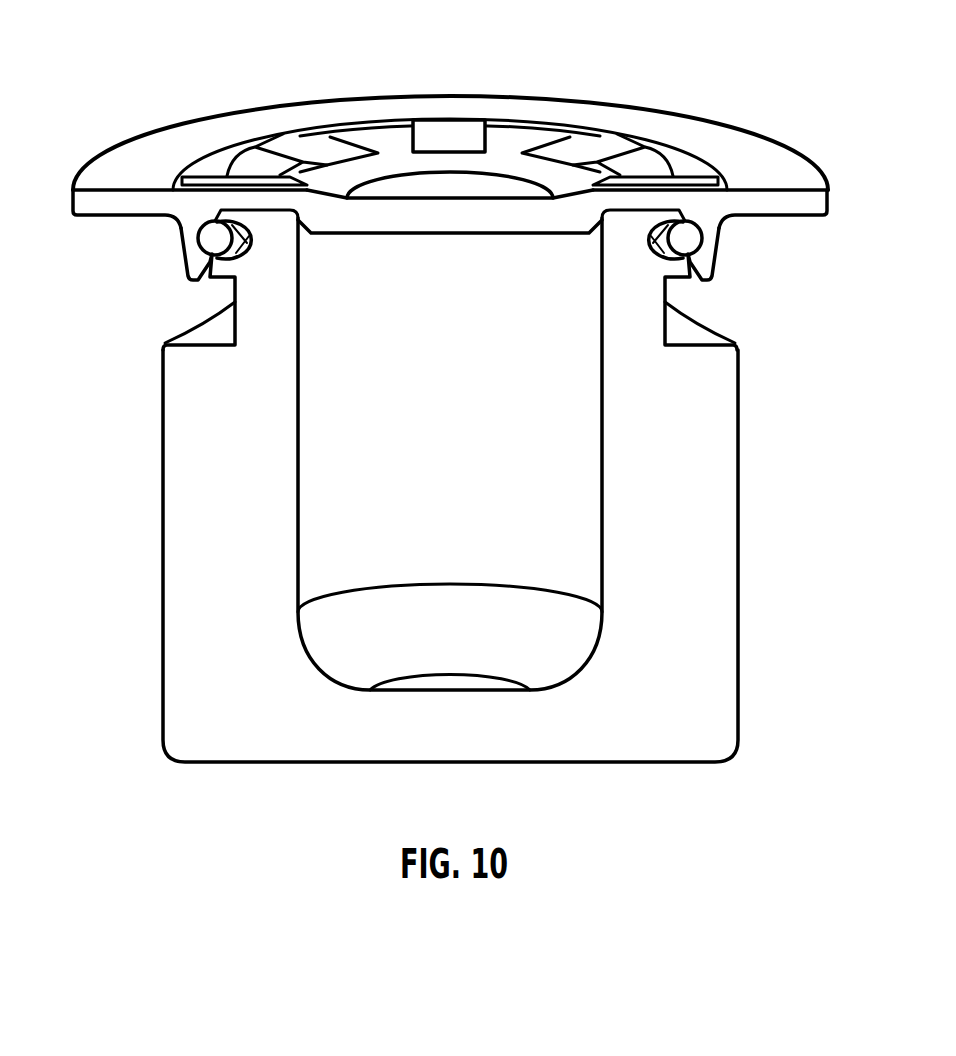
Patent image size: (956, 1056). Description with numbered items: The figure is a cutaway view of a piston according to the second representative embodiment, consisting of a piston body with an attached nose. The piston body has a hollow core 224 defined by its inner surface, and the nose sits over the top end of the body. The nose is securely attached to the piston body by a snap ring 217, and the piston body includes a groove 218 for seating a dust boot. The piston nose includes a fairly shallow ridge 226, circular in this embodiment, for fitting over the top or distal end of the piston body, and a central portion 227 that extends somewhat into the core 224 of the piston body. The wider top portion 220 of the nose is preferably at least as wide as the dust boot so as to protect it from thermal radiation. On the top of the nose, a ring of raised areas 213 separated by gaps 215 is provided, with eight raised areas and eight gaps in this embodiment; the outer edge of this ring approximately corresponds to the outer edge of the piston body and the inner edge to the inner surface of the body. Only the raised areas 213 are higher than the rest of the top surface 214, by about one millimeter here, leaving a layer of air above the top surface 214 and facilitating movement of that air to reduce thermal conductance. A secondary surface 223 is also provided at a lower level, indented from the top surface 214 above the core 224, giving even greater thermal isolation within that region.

The raised areas 213 is at (367, 130).
The top surface 214 is at (727, 150).
The gaps 215 is at (603, 140).
The snap ring 217 is at (687, 237).
The groove 218 is at (203, 293).
The wider top portion 220 is at (125, 220).
The secondary surface 223 is at (438, 190).
The hollow core 224 is at (320, 489).
The ridge 226 is at (193, 287).
The central portion 227 is at (471, 230).